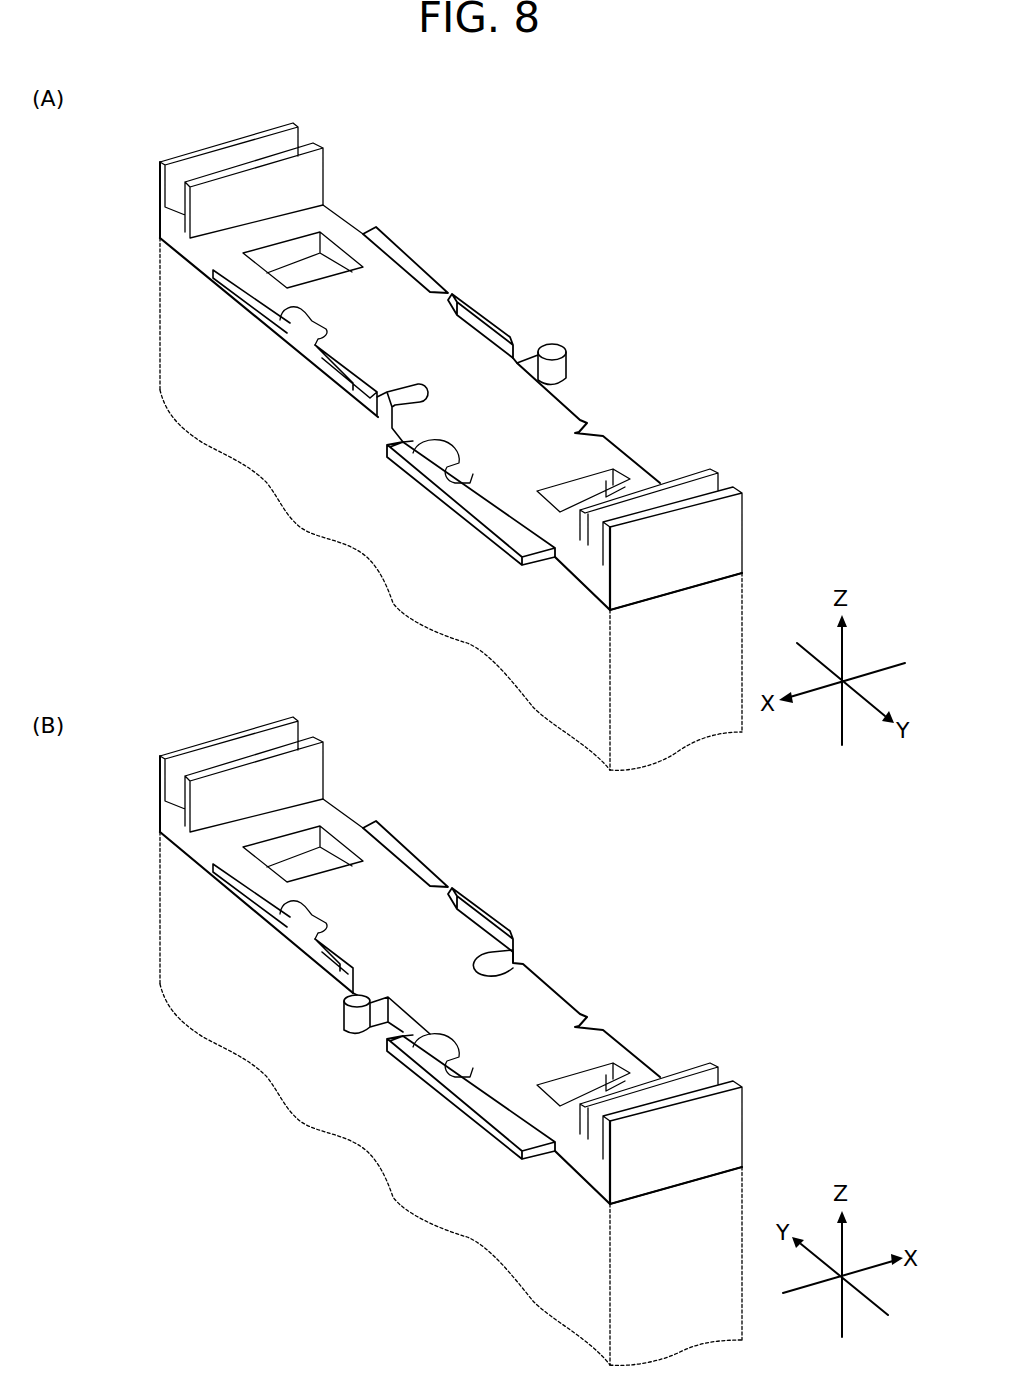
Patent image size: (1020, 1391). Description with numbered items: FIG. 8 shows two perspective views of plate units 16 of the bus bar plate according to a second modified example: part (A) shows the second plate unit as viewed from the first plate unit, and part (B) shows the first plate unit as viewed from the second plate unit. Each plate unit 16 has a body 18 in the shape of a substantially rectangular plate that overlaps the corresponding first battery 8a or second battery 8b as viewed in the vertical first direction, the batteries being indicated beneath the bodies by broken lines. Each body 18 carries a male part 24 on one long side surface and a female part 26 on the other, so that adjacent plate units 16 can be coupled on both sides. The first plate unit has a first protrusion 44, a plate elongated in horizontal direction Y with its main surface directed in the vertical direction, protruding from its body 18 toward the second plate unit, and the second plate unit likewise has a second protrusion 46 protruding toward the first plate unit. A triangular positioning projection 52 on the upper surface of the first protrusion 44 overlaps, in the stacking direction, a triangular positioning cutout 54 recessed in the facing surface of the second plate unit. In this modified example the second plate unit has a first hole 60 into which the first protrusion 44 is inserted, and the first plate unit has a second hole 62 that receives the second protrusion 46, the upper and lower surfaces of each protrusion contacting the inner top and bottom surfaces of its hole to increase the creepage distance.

The plate unit 16 is at (227, 137).
The body 18 is at (223, 247).
The male part 24 is at (343, 1022).
The female part 26 is at (415, 378).
The first protrusion 44 is at (487, 317).
The second protrusion 46 is at (478, 530).
The positioning projection 52 is at (443, 298).
The positioning cutout 54 is at (267, 317).
The first hole 60 is at (307, 365).
The second hole 62 is at (307, 959).
The first battery 8a is at (297, 1099).
The second battery 8b is at (297, 505).